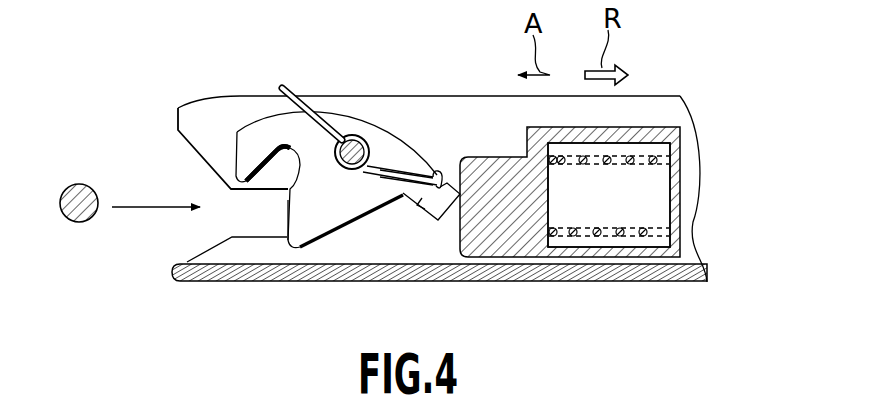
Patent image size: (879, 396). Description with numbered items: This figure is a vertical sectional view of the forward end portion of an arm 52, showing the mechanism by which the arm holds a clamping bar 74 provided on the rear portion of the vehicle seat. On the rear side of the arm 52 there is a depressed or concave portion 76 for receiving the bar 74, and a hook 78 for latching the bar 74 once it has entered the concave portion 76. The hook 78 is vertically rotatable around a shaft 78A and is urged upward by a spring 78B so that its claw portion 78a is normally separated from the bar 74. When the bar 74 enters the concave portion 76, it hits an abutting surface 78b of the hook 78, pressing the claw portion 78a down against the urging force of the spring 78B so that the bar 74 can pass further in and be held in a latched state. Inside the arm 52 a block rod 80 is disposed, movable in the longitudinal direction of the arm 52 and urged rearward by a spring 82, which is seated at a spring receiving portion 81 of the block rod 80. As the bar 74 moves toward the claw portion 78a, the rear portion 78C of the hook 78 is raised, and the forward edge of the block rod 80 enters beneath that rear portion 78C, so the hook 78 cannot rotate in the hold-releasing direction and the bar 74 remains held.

The arm 52 is at (322, 95).
The clamping bar 74 is at (80, 222).
The depressed or concave portion 76 is at (202, 230).
The hook 78 is at (333, 248).
The claw portion 78a is at (226, 151).
The abutting surface 78b is at (285, 215).
The shaft 78A is at (360, 136).
The spring 78B is at (415, 163).
The rear portion of the hook 78C is at (423, 205).
The block rod 80 is at (510, 252).
The spring receiving portion 81 is at (670, 148).
The spring 82 is at (598, 230).